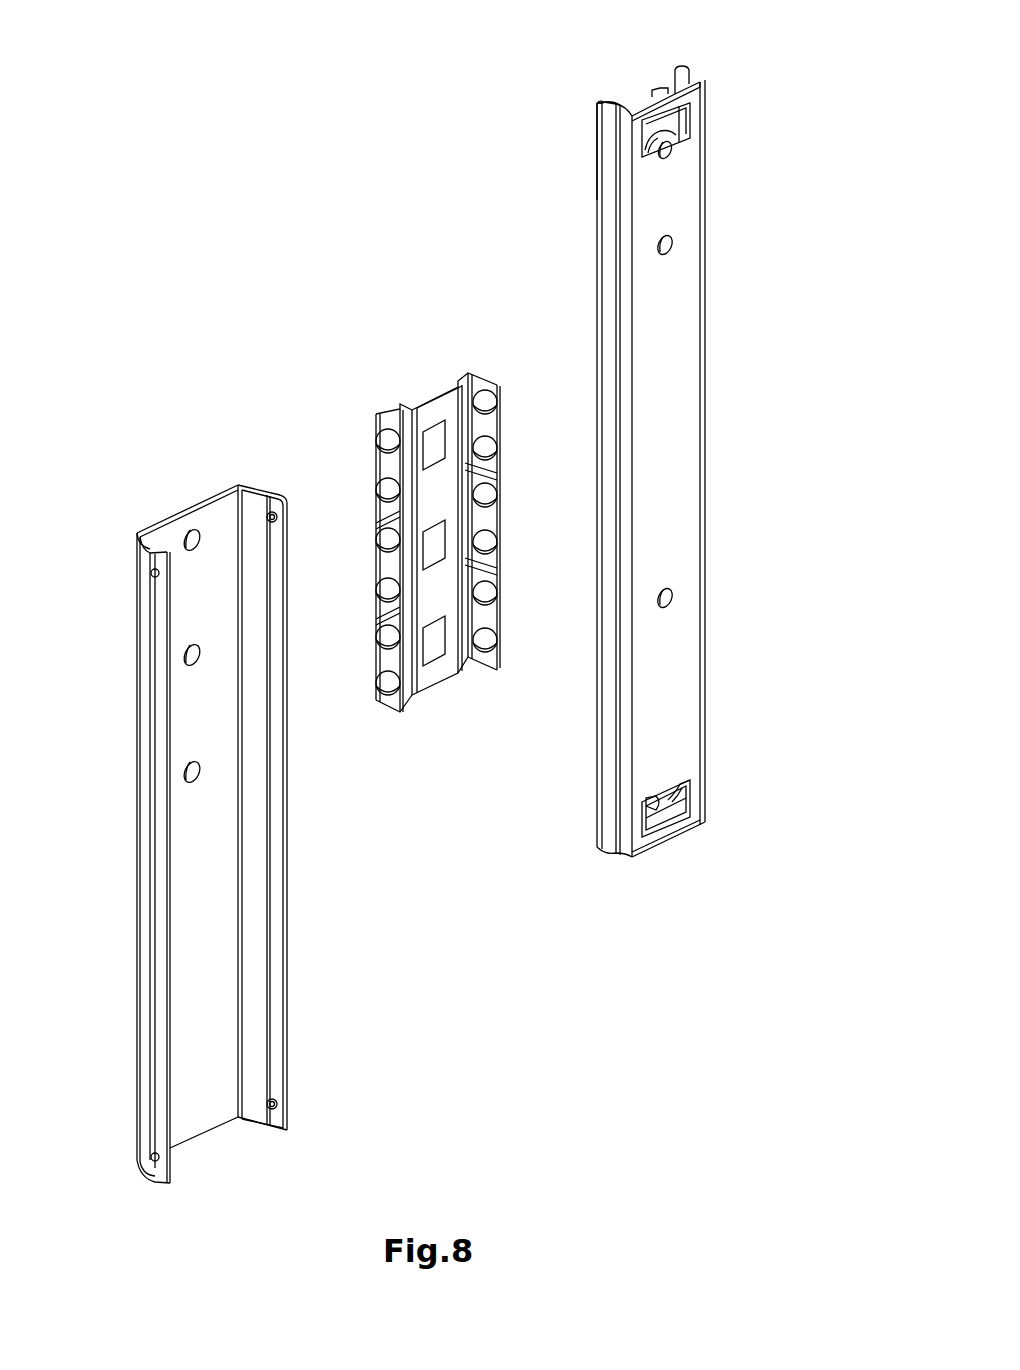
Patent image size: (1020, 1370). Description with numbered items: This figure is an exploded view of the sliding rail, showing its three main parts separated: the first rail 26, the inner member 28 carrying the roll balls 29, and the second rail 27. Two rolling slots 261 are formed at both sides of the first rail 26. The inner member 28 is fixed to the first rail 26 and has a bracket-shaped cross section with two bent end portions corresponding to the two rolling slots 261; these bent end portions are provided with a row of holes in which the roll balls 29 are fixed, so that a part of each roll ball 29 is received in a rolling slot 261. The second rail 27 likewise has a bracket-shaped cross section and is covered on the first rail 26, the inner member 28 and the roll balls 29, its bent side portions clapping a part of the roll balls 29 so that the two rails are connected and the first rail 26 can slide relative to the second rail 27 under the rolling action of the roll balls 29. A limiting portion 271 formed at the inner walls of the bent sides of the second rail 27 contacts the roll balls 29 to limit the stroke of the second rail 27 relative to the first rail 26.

The first rail 26 is at (678, 340).
The rolling slot 261 is at (702, 70).
The second rail 27 is at (150, 918).
The limiting portion 271 is at (270, 514).
The inner member 28 is at (432, 408).
The roll balls 29 is at (384, 441).